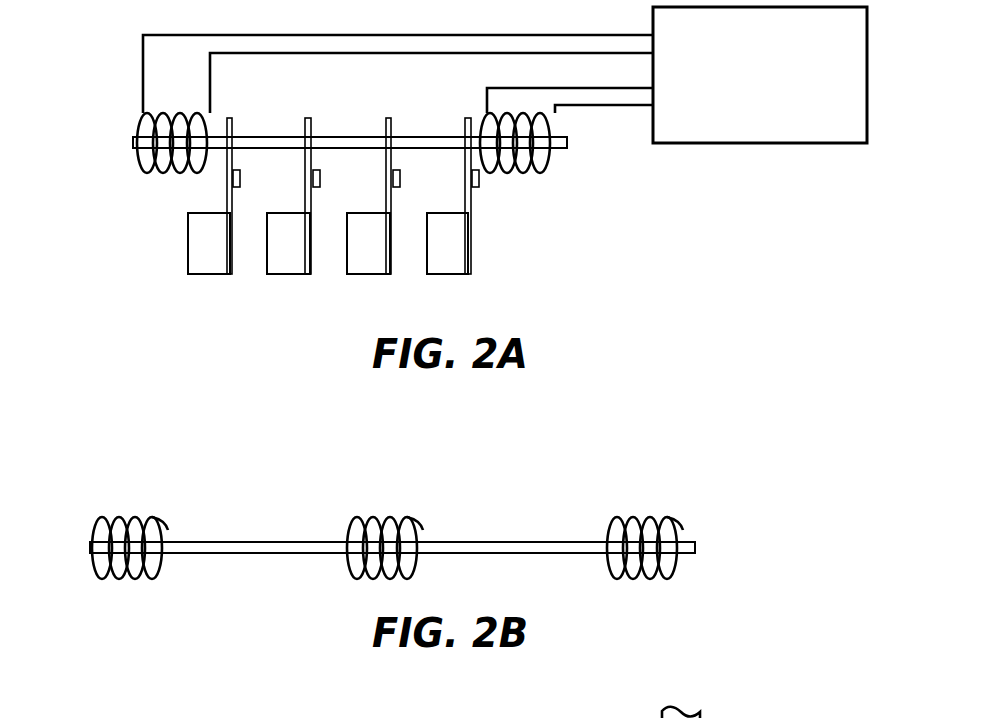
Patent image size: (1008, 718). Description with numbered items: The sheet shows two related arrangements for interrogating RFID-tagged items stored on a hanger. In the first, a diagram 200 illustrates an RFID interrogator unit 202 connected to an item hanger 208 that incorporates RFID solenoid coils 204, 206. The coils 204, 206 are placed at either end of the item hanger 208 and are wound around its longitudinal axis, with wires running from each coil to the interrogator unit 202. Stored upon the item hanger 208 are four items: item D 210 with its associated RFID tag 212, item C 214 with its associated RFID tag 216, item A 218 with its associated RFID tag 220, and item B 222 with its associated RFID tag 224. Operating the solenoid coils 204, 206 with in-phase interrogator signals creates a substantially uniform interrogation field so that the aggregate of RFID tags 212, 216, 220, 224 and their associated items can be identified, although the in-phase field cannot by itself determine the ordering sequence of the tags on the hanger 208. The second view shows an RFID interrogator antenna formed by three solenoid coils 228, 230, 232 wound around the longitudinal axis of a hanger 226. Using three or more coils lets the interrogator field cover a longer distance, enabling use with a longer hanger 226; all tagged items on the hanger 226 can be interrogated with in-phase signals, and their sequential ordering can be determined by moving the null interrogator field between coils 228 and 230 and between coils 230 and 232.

In FIG. 2A, the diagram 200 is at (107, 29).
In FIG. 2A, the RFID interrogator unit 202 is at (785, 143).
In FIG. 2A, the solenoid coil 204 is at (557, 167).
In FIG. 2A, the solenoid coil 206 is at (146, 170).
In FIG. 2A, the item hanger 208 is at (345, 137).
In FIG. 2A, the item D 210 is at (188, 258).
In FIG. 2A, the RFID tag 212 is at (237, 187).
In FIG. 2A, the item C 214 is at (288, 275).
In FIG. 2A, the RFID tag 216 is at (317, 187).
In FIG. 2A, the item A 218 is at (365, 275).
In FIG. 2A, the RFID tag 220 is at (397, 187).
In FIG. 2A, the item B 222 is at (470, 262).
In FIG. 2A, the RFID tag 224 is at (476, 187).
In FIG. 2B, the hanger 226 is at (240, 553).
In FIG. 2B, the solenoid coil 228 is at (167, 522).
In FIG. 2B, the solenoid coil 230 is at (420, 520).
In FIG. 2B, the solenoid coil 232 is at (677, 520).